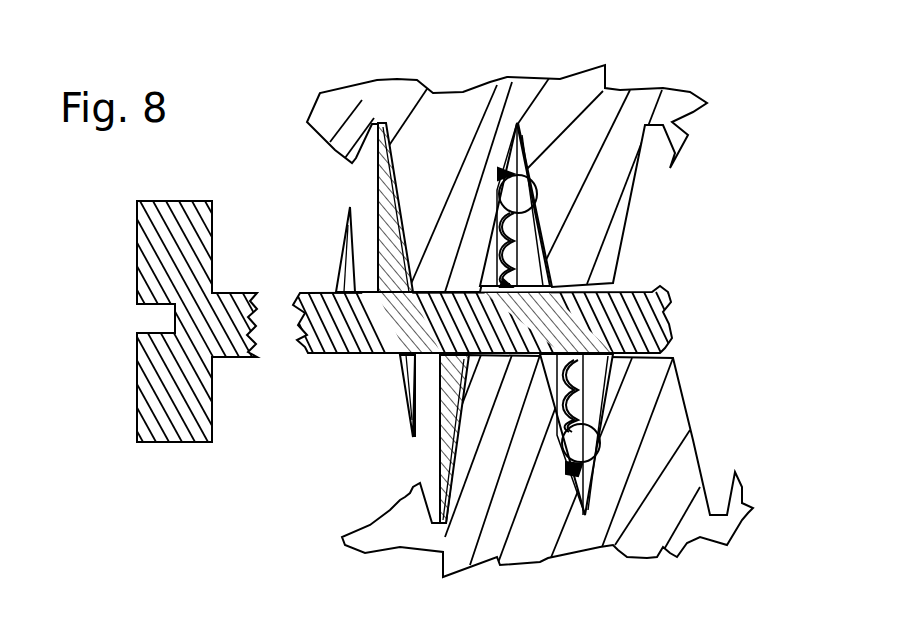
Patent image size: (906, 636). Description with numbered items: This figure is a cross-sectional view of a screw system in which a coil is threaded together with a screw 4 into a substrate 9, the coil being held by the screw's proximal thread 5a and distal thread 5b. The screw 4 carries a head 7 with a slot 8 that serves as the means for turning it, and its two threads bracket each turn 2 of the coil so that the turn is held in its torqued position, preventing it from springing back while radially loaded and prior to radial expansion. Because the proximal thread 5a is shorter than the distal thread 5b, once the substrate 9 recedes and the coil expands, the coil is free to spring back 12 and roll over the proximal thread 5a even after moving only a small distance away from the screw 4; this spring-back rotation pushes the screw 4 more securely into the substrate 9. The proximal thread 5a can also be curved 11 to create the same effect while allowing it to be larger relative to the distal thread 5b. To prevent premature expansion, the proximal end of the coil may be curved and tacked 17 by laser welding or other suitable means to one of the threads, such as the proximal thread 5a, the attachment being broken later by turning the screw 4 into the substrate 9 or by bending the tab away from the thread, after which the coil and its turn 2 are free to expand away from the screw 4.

The turn of the coil 2 is at (522, 232).
The screw 4 is at (667, 278).
The proximal thread 5a is at (342, 233).
The distal thread 5b is at (374, 196).
The head 7 is at (219, 409).
The slot 8 is at (131, 326).
The substrate 9 is at (625, 84).
The curved proximal thread 11 is at (422, 418).
The spring back 12 is at (546, 193).
The tack 17 is at (368, 276).